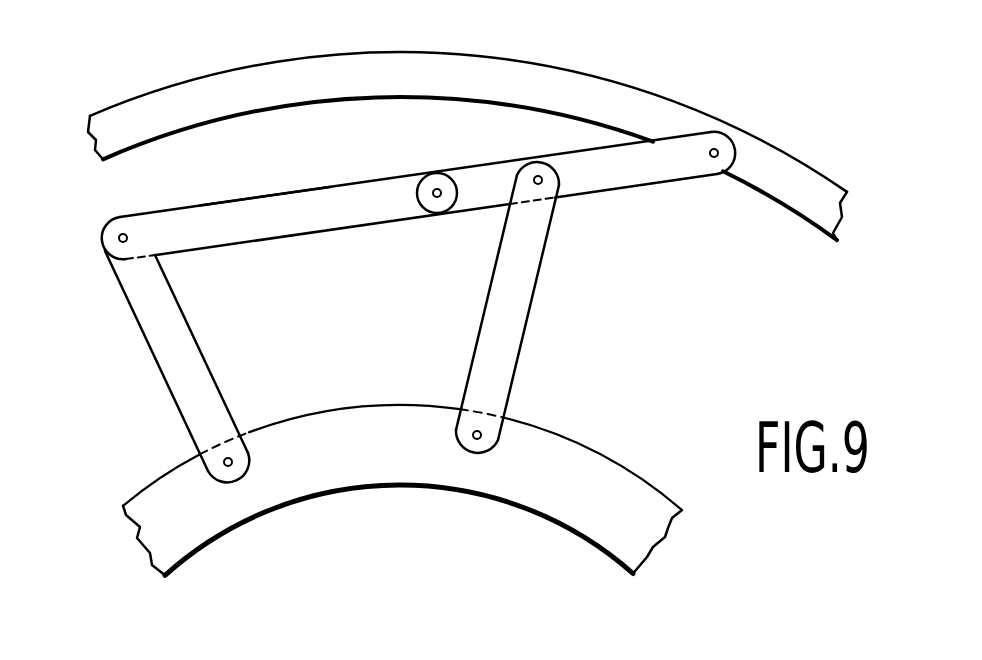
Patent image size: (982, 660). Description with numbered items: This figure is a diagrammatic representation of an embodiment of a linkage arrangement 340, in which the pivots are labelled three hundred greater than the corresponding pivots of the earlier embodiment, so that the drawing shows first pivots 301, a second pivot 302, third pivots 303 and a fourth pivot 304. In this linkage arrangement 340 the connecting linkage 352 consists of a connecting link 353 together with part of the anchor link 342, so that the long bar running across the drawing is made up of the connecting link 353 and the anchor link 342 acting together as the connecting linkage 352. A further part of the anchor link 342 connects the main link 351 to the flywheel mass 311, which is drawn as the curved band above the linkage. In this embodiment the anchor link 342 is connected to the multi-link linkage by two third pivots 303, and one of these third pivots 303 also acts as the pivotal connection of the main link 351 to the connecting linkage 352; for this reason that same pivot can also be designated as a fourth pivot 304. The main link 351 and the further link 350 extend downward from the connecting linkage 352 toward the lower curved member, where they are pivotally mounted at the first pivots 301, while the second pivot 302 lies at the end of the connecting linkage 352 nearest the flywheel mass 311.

The first pivot 301 is at (234, 458).
The second pivot 302 is at (716, 150).
The third pivot 303 is at (538, 176).
The fourth pivot 304 is at (548, 177).
The flywheel mass 311 is at (803, 186).
The linkage arrangement 340 is at (398, 307).
The anchor link 342 is at (627, 175).
The first link 350 is at (158, 335).
The main link 351 is at (508, 350).
The connecting linkage 352 is at (337, 238).
The connecting link 353 is at (262, 210).